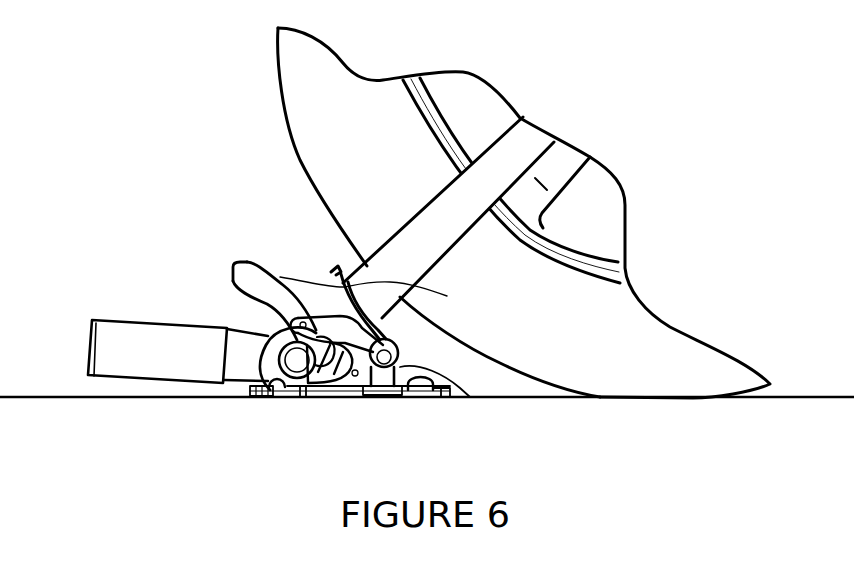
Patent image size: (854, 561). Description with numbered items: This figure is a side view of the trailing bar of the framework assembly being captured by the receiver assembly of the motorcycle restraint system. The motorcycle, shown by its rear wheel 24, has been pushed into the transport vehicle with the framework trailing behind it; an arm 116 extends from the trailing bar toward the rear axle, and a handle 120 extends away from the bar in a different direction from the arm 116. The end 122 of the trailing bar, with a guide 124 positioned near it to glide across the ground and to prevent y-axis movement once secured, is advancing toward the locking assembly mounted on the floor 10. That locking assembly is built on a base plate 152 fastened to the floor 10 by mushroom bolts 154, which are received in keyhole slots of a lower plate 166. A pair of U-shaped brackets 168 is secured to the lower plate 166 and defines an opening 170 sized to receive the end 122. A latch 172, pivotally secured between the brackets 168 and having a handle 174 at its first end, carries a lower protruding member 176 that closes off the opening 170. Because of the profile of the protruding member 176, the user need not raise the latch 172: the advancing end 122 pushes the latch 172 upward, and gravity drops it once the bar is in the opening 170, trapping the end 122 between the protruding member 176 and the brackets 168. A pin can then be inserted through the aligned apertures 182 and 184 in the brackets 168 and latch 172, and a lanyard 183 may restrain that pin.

The floor 10 is at (93, 398).
The rear wheel 24 is at (335, 85).
The arm 116 is at (410, 225).
The handle 120 is at (112, 333).
The end of trailing bar 122 is at (300, 357).
The guide 124 is at (268, 350).
The base plate 152 is at (390, 399).
The mushroom bolt 154 is at (273, 400).
The lower plate 166 is at (303, 400).
The U-shaped bracket 168 is at (465, 398).
The opening 170 is at (345, 372).
The latch 172 is at (272, 318).
The handle 174 is at (250, 262).
The lower protruding member 176 is at (341, 362).
The aperture 182 is at (385, 313).
The lanyard 183 is at (383, 294).
The aperture 184 is at (320, 299).